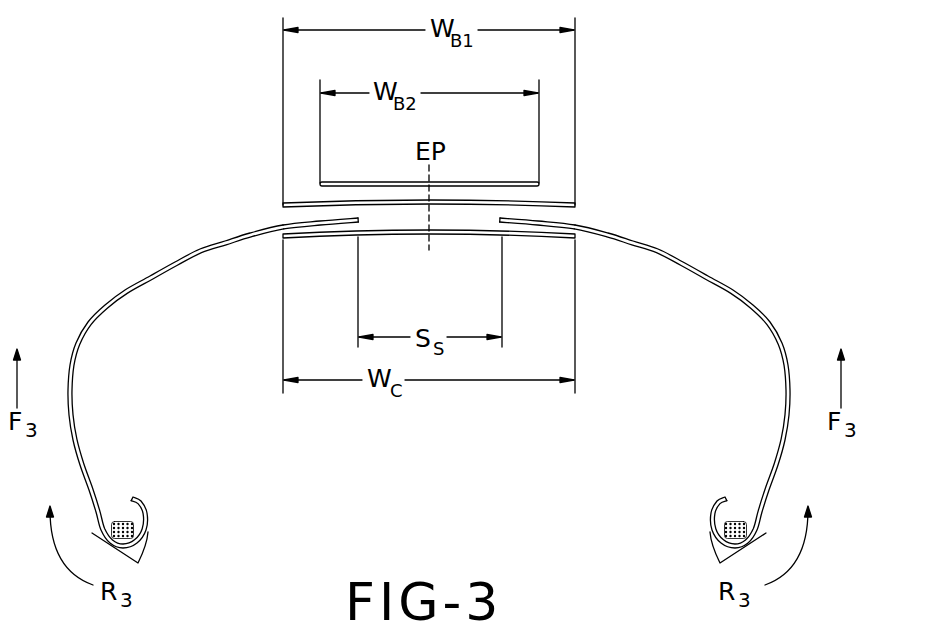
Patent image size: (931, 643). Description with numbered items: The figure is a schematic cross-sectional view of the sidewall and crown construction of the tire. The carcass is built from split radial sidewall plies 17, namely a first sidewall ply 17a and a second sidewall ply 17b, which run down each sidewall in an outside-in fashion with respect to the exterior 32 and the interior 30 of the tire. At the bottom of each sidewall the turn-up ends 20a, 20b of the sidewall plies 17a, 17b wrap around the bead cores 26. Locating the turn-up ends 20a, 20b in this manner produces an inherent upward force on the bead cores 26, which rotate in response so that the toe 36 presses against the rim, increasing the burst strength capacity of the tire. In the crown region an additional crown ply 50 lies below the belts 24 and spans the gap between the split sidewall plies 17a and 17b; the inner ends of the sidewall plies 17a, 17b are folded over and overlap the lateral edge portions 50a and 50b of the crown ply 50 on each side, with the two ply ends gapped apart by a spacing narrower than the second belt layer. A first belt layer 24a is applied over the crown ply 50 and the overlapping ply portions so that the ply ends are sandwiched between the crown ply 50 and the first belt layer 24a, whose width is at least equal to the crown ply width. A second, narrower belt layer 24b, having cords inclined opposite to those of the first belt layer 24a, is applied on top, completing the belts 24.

The sidewall plies 17 is at (435, 359).
The first sidewall ply 17a is at (105, 288).
The second sidewall ply 17b is at (755, 286).
The turn-up end 20a is at (145, 512).
The turn-up end 20b is at (712, 513).
The belts 24 is at (376, 159).
The first belt layer 24a is at (303, 175).
The second belt layer 24b is at (497, 183).
The bead cores 26 is at (117, 520).
The interior 30 is at (128, 405).
The exterior 32 is at (41, 341).
The toe 36 is at (138, 563).
The crown ply 50 is at (398, 232).
The lateral edge portion of crown ply 50a is at (302, 232).
The lateral edge portion of crown ply 50b is at (557, 232).